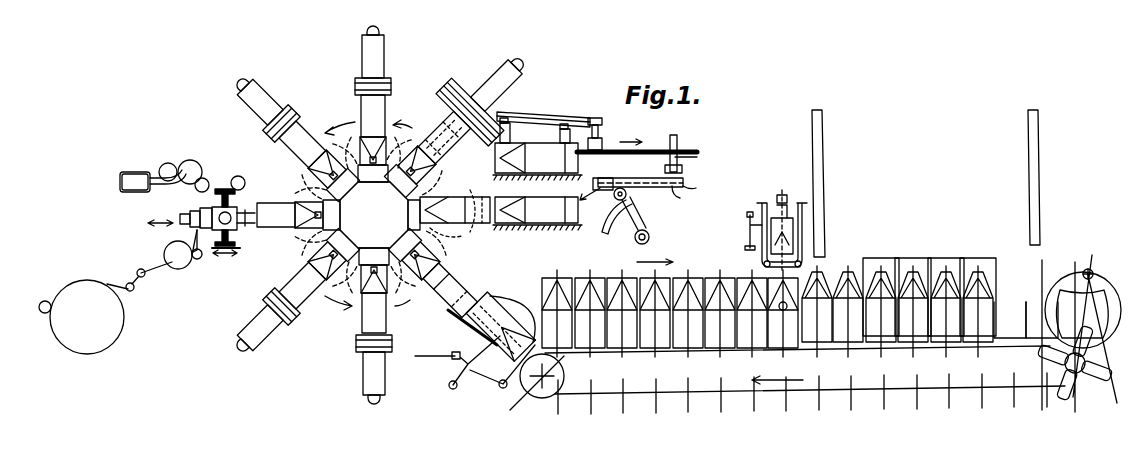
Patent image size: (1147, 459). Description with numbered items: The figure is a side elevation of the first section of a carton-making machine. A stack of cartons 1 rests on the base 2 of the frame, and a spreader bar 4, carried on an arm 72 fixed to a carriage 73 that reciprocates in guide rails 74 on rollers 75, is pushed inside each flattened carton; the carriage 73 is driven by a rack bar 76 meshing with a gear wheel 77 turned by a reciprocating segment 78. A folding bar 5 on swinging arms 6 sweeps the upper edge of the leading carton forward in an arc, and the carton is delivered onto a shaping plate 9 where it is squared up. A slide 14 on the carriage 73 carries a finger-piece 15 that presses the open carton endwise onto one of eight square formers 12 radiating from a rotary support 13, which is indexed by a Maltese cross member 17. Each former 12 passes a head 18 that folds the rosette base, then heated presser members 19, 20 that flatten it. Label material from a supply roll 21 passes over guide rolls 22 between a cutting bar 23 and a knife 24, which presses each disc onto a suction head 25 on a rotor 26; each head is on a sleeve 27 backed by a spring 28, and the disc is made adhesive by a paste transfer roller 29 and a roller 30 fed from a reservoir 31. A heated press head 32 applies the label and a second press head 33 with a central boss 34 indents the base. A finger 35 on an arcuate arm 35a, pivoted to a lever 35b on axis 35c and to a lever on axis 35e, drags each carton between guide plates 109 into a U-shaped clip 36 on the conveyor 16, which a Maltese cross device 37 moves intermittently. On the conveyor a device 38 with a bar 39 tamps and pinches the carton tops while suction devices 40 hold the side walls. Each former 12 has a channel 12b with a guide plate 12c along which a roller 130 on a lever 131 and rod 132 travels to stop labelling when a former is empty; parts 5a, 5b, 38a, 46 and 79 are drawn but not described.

The stack of cartons 1 is at (515, 196).
The base 2 is at (545, 174).
The spreader bar 4 is at (655, 150).
The folding bar 5 is at (522, 114).
The plate fastening 5a is at (536, 115).
The support post 5b is at (535, 133).
The swinging arms 6 is at (600, 130).
The shaping plate 9 is at (535, 225).
The former 12 is at (377, 178).
The transverse channel 12b is at (442, 134).
The guide plate 12c is at (462, 212).
The rotary support 13 is at (374, 215).
The slide 14 is at (628, 184).
The finger-piece 15 is at (593, 201).
The conveyor 16 is at (664, 393).
The Maltese cross member 17 is at (407, 216).
The head 18 is at (450, 100).
The presser member 19 is at (361, 70).
The presser member 20 is at (270, 115).
The supply roll 21 is at (120, 318).
The guide rolls 22 is at (178, 265).
The cutting bar 23 is at (207, 230).
The reciprocating knife 24 is at (192, 217).
The suction head 25 is at (240, 238).
The rotor 26 is at (237, 214).
The sleeve 27 is at (276, 229).
The coiled compression spring 28 is at (233, 195).
The paste transfer roller 29 is at (209, 184).
The roller 30 is at (199, 166).
The reservoir 31 is at (141, 190).
The heated press head 32 is at (290, 310).
The heated press head 33 is at (390, 340).
The central boss 34 is at (380, 333).
The finger 35 is at (462, 240).
The arcuate arm 35a is at (516, 308).
The lever 35b is at (478, 358).
The axis 35c is at (457, 372).
The axis 35e is at (502, 375).
The U-shaped clip 36 is at (588, 349).
The Maltese cross device 37 is at (1096, 368).
The device 38 is at (800, 227).
The closing plunger 38a is at (777, 198).
The horizontal bar 39 is at (748, 246).
The suction devices 40 is at (783, 308).
The guide rail 46 is at (823, 203).
The arm 72 is at (680, 168).
The carriage 73 is at (680, 197).
The guide rails 74 is at (697, 191).
The rollers 75 is at (612, 178).
The rack bar 76 is at (628, 192).
The gear wheel 77 is at (632, 207).
The reciprocating segment 78 is at (601, 232).
The shaft 79 is at (205, 212).
The guide plates 109 is at (470, 327).
The roller 130 is at (452, 150).
The lever 131 is at (462, 148).
The rod 132 is at (462, 165).